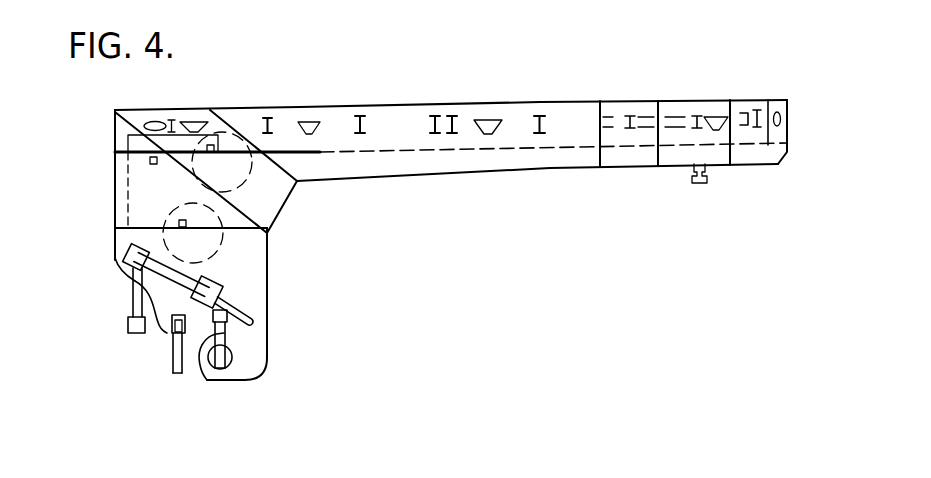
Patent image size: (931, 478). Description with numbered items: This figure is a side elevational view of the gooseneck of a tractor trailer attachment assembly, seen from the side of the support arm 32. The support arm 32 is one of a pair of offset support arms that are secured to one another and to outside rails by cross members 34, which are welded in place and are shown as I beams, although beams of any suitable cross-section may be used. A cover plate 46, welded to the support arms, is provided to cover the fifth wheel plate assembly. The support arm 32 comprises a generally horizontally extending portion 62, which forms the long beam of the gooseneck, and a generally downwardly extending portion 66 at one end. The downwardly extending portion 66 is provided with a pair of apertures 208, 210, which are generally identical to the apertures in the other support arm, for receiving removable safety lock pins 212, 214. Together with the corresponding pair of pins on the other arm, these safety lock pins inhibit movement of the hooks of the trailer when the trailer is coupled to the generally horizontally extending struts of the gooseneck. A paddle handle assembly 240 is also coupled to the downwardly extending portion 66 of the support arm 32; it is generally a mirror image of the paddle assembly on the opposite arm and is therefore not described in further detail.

The support arm 32 is at (396, 130).
The cross members 34 is at (541, 99).
The generally horizontally extending portion 62 is at (578, 115).
The cover plate 46 is at (684, 100).
The generally downwardly extending portion 66 is at (260, 268).
The aperture 210 is at (232, 327).
The paddle handle assembly 240 is at (132, 297).
The aperture 208 is at (163, 333).
The removable safety lock pin 212 is at (166, 334).
The removable safety lock pin 214 is at (203, 378).